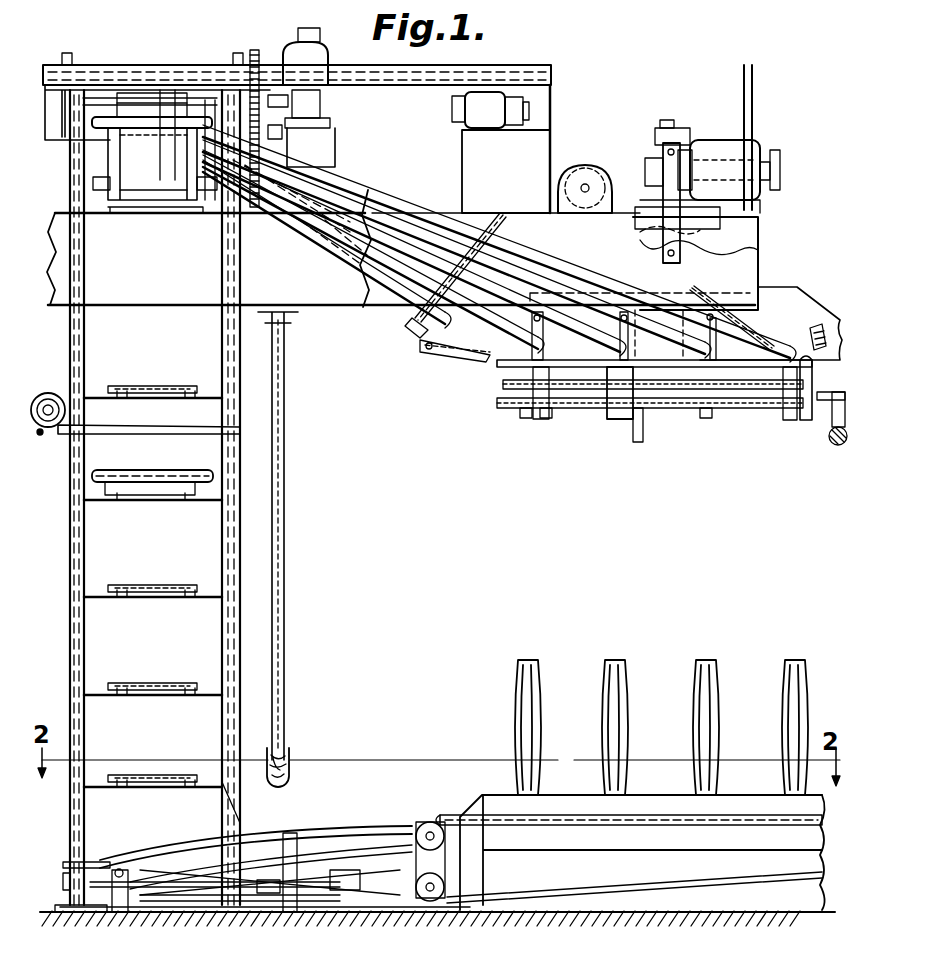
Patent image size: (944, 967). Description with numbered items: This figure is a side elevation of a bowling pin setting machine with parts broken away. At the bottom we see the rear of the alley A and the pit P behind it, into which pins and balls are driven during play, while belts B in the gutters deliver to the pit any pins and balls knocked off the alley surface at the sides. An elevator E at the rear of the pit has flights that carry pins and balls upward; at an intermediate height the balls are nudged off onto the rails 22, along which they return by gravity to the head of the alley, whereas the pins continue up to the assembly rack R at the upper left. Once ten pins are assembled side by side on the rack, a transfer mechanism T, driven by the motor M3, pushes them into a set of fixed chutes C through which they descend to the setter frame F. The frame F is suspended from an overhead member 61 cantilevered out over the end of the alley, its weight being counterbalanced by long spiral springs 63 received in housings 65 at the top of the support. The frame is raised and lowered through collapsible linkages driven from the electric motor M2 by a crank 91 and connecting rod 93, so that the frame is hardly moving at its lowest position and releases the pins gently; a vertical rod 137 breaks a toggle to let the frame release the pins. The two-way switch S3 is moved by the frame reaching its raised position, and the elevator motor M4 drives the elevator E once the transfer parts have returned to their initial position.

The transfer mechanism T is at (80, 83).
The assembly rack R is at (142, 135).
The elevator motor M4 is at (330, 58).
The motor M3 is at (487, 100).
The electric motor M2 is at (722, 148).
The two-way switch S3 is at (678, 134).
The housings 65 is at (586, 184).
The crank 91 is at (658, 168).
The connecting rod 93 is at (674, 228).
The overhead member 61 is at (760, 242).
The spiral springs 63 is at (616, 246).
The fixed chutes C is at (362, 184).
The setter frame F is at (495, 375).
The vertical rod 137 is at (643, 440).
The rails 22 is at (60, 440).
The elevator E is at (66, 678).
The alley A is at (737, 662).
The pit P is at (340, 820).
The belts B is at (578, 823).